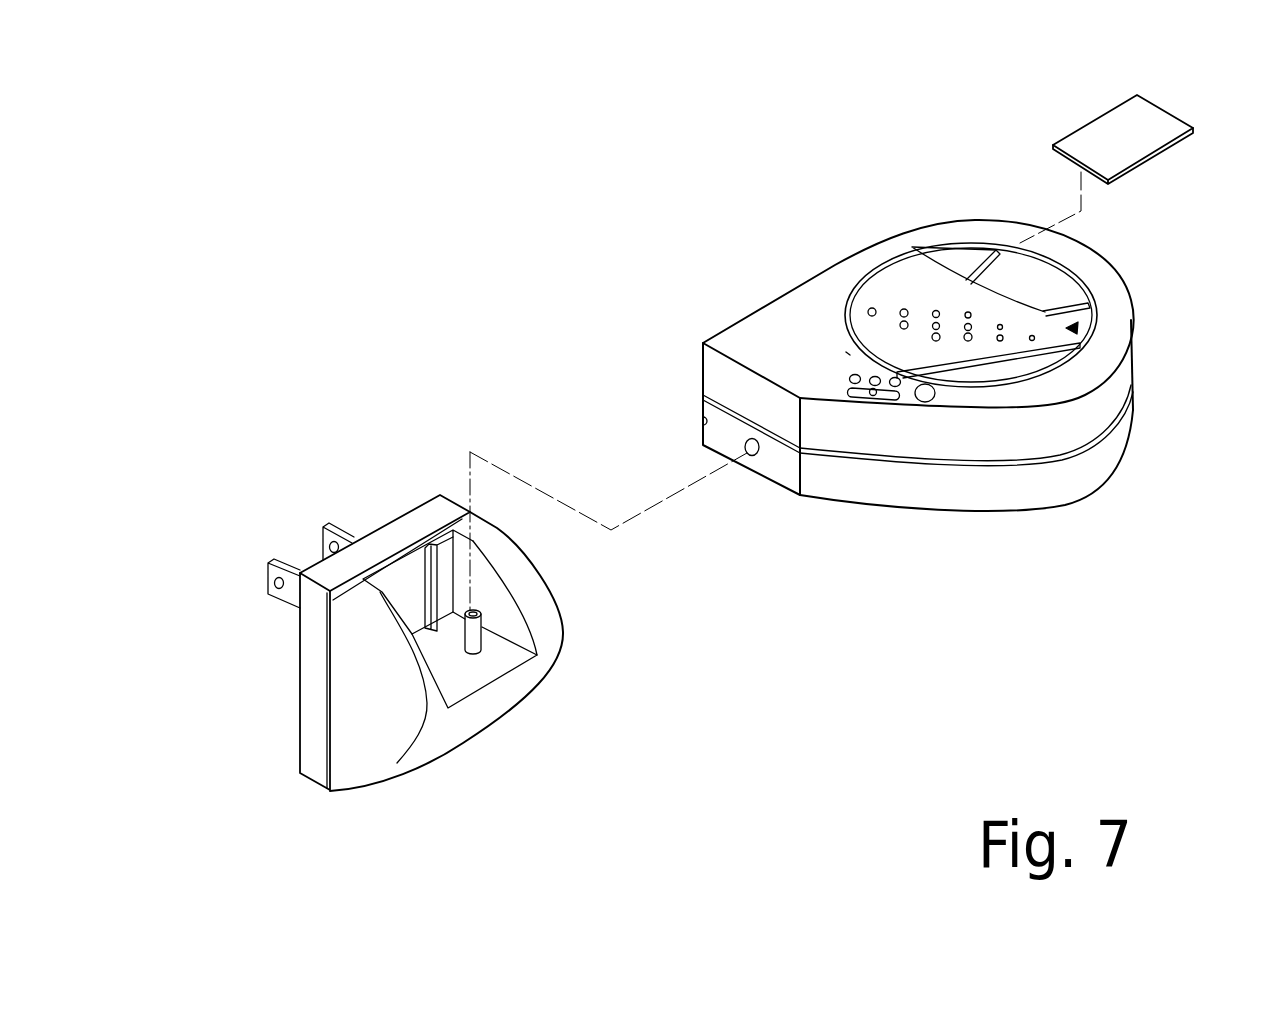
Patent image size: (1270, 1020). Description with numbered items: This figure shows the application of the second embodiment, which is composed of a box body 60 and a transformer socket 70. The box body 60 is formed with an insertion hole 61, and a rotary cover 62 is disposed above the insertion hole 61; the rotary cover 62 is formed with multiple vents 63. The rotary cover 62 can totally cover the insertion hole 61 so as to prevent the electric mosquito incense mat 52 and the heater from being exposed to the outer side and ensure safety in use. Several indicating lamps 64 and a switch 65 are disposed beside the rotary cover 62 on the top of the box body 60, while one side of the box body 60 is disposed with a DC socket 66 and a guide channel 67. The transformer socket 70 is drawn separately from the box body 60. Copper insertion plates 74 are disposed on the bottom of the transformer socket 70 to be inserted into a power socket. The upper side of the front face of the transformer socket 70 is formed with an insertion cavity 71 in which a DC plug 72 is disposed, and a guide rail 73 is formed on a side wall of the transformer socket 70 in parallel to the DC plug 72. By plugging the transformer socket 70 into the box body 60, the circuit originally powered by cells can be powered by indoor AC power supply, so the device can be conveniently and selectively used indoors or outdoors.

The electric mosquito incense mat 52 is at (1157, 122).
The box body 60 is at (772, 323).
The insertion hole 61 is at (1055, 289).
The rotary cover 62 is at (906, 274).
The vents 63 is at (870, 308).
The indicating lamps 64 is at (928, 402).
The switch 65 is at (873, 396).
The DC socket 66 is at (757, 455).
The guide channel 67 is at (703, 418).
The transformer socket 70 is at (367, 762).
The insertion cavity 71 is at (465, 680).
The DC plug 72 is at (477, 635).
The guide rail 73 is at (427, 555).
The copper insertion plates 74 is at (288, 592).